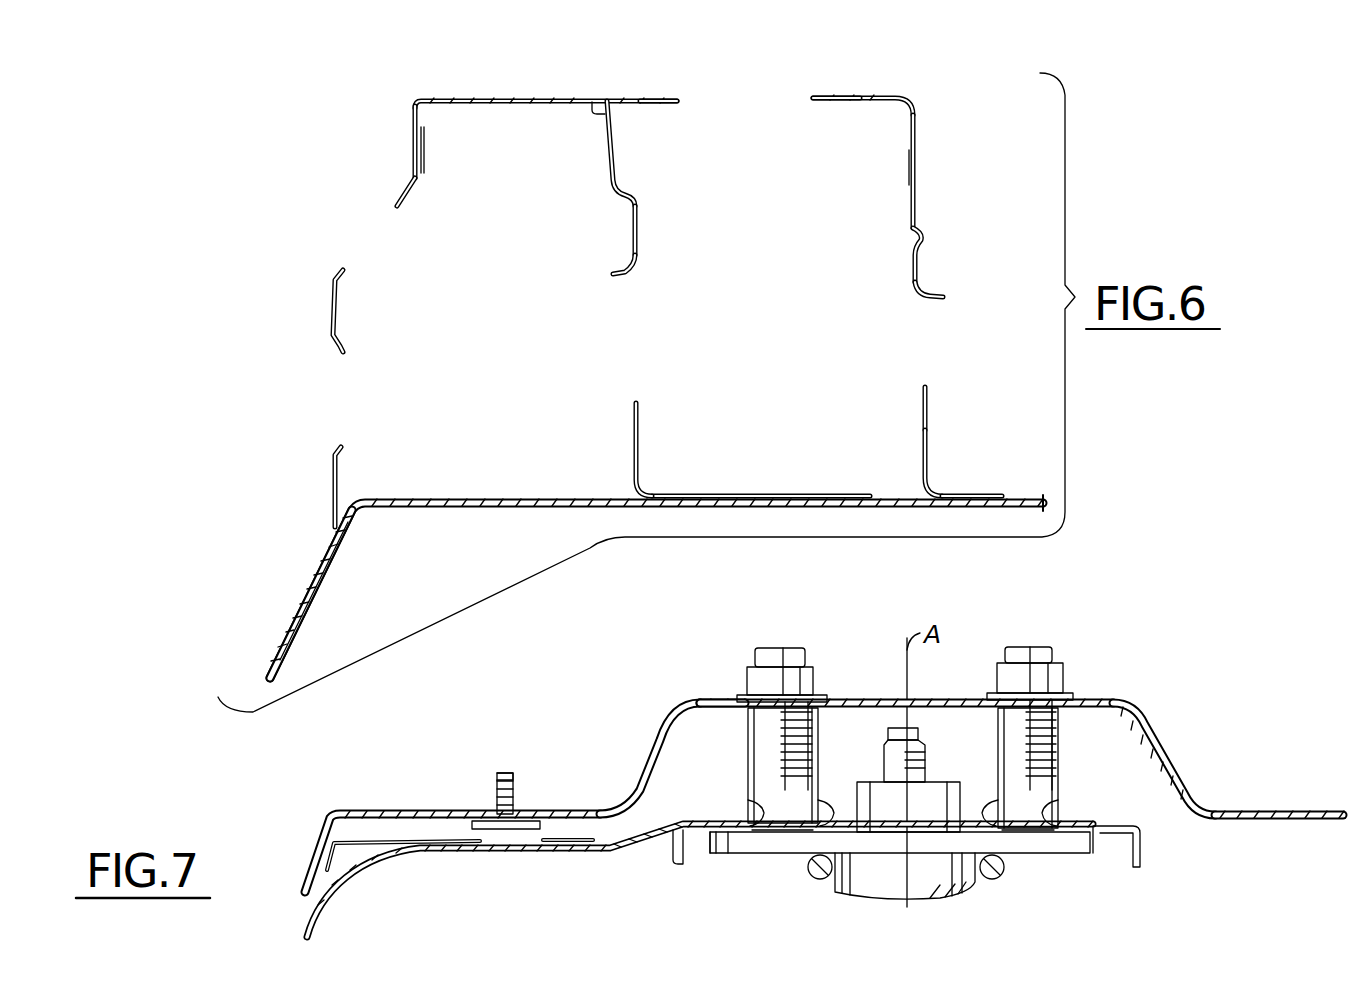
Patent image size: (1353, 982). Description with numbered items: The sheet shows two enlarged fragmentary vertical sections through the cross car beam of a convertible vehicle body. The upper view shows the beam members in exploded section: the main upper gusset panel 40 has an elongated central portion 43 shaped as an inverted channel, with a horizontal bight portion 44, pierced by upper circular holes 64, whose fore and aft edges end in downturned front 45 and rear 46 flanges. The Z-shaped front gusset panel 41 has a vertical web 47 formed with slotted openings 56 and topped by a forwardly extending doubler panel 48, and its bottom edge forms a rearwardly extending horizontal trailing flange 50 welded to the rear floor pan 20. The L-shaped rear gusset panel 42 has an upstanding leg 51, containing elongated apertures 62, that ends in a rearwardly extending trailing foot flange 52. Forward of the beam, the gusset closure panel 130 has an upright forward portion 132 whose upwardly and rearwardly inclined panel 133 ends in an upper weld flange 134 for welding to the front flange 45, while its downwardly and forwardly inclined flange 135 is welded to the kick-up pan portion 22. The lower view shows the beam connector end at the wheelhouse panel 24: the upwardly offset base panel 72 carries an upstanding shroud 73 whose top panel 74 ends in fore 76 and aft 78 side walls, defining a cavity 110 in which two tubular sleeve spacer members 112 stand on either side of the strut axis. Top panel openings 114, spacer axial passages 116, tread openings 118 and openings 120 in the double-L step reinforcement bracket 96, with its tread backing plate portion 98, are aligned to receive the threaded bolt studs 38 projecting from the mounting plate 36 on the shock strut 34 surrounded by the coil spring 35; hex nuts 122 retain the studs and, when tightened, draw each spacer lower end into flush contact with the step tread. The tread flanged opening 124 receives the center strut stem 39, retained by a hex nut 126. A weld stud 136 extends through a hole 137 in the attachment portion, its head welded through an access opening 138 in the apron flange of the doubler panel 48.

In FIG. 6, the rear floor pan 20 is at (470, 499).
In FIG. 6, the kick-up pan portion 22 is at (322, 584).
In FIG. 7, the wheelhouse panel 24 is at (303, 915).
In FIG. 7, the shock strut 34 is at (993, 883).
In FIG. 7, the coil spring 35 is at (811, 876).
In FIG. 7, the mounting plate 36 is at (1128, 856).
In FIG. 7, the threaded bolt stud 38 is at (782, 647).
In FIG. 7, the center strut stem 39 is at (884, 761).
In FIG. 6, the upper gusset panel 40 is at (901, 87).
In FIG. 6, the front gusset panel 41 is at (641, 225).
In FIG. 7, the front gusset panel 41 is at (357, 863).
In FIG. 6, the rear gusset panel 42 is at (934, 391).
In FIG. 6, the central portion 43 is at (824, 91).
In FIG. 6, the bight portion 44 is at (531, 100).
In FIG. 6, the front flange 45 is at (410, 148).
In FIG. 6, the rear flange 46 is at (920, 161).
In FIG. 6, the vertical web 47 is at (640, 425).
In FIG. 6, the doubler panel 48 is at (597, 110).
In FIG. 6, the trailing flange 50 is at (924, 263).
In FIG. 6, the upstanding leg 51 is at (934, 442).
In FIG. 6, the trailing foot flange 52 is at (975, 493).
In FIG. 6, the slotted openings 56 is at (614, 274).
In FIG. 6, the elongated apertures 62 is at (944, 297).
In FIG. 6, the circular holes 64 is at (679, 100).
In FIG. 7, the base panel 72 is at (356, 811).
In FIG. 7, the shroud 73 is at (703, 693).
In FIG. 7, the top panel 74 is at (1116, 700).
In FIG. 7, the fore side wall 76 is at (652, 746).
In FIG. 7, the aft side wall 78 is at (1181, 792).
In FIG. 7, the step reinforcement bracket 96 is at (665, 861).
In FIG. 7, the tread backing plate portion 98 is at (700, 880).
In FIG. 7, the cavity 110 is at (1142, 742).
In FIG. 7, the sleeve spacer member 112 is at (746, 737).
In FIG. 7, the top panel openings 114 is at (802, 695).
In FIG. 7, the spacer axial passages 116 is at (806, 735).
In FIG. 7, the tread openings 118 is at (748, 800).
In FIG. 7, the bracket lower backing plate portion openings 120 is at (776, 838).
In FIG. 7, the hex nut 122 is at (746, 664).
In FIG. 7, the tread flanged opening 124 is at (925, 800).
In FIG. 7, the hex nut 126 is at (887, 822).
In FIG. 6, the gusset closure panel 130 is at (325, 318).
In FIG. 6, the upright forward portion 132 is at (334, 470).
In FIG. 6, the inclined panel 133 is at (397, 200).
In FIG. 6, the upper weld flange 134 is at (432, 147).
In FIG. 6, the inclined flange 135 is at (300, 590).
In FIG. 7, the weld stud 136 is at (513, 771).
In FIG. 7, the hole 137 is at (496, 790).
In FIG. 7, the access opening 138 is at (487, 852).